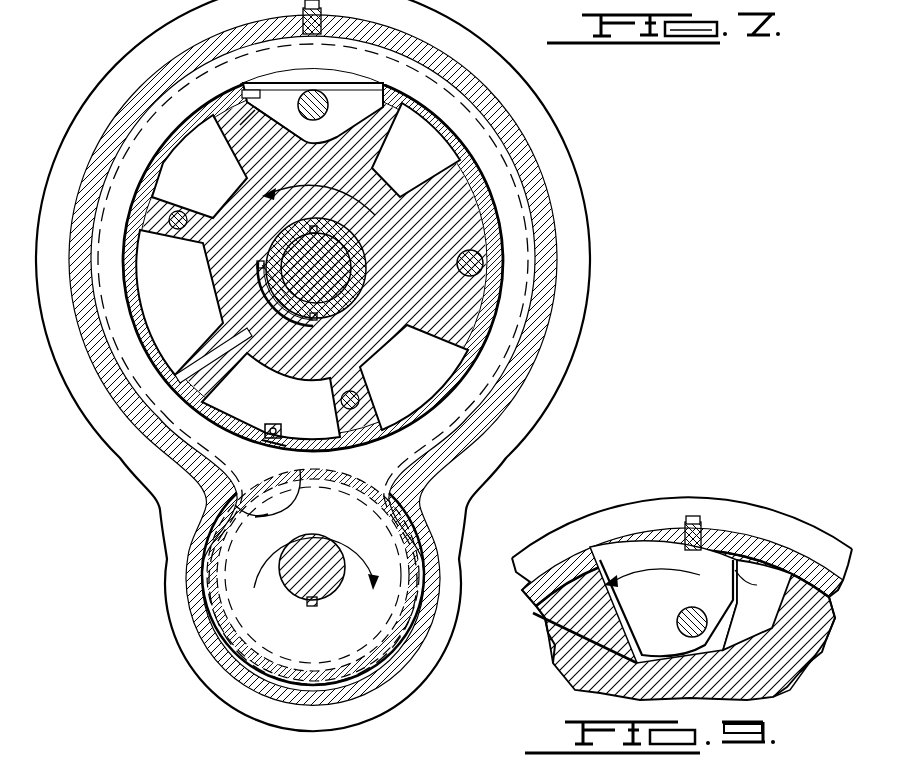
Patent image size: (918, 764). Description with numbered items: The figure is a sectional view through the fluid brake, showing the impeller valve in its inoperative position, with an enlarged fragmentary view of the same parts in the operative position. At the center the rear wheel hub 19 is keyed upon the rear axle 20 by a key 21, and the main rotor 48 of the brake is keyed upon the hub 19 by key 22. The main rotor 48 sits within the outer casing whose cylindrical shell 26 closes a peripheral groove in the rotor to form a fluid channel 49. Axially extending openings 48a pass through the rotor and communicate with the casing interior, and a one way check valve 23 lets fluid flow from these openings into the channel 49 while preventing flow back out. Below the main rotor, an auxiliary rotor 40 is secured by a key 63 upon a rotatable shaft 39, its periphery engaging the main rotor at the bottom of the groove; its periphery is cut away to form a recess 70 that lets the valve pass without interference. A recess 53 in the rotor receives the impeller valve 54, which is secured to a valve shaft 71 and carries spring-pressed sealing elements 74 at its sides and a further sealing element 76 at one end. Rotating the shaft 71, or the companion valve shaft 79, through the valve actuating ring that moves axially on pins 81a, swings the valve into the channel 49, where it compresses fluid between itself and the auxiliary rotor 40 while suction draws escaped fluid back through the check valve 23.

In FIG. 7, the rear wheel hub 19 is at (360, 247).
In FIG. 7, the rear axle 20 is at (328, 275).
In FIG. 7, the key 21 is at (322, 232).
In FIG. 7, the key 22 is at (258, 266).
In FIG. 7, the check valve 23 is at (280, 425).
In FIG. 7, the cylindrical shell 26 is at (350, 26).
In FIG. 9, the cylindrical shell 26 is at (737, 553).
In FIG. 7, the rotatable shaft 39 is at (279, 563).
In FIG. 7, the auxiliary rotor 40 is at (270, 589).
In FIG. 7, the main rotor 48 is at (367, 343).
In FIG. 9, the main rotor 48 is at (760, 698).
In FIG. 7, the axially extending openings 48a is at (298, 395).
In FIG. 7, the fluid channel 49 is at (172, 122).
In FIG. 9, the fluid channel 49 is at (545, 633).
In FIG. 7, the recess 53 is at (236, 158).
In FIG. 9, the recess 53 is at (760, 621).
In FIG. 7, the impeller valve 54 is at (285, 112).
In FIG. 9, the impeller valve 54 is at (737, 578).
In FIG. 7, the key 63 is at (315, 604).
In FIG. 7, the notch or recess 70 is at (233, 495).
In FIG. 7, the valve shaft 71 is at (328, 107).
In FIG. 9, the valve shaft 71 is at (678, 612).
In FIG. 7, the sealing elements 74 is at (322, 83).
In FIG. 9, the sealing elements 74 is at (700, 583).
In FIG. 7, the sealing element 76 is at (255, 90).
In FIG. 9, the sealing element 76 is at (630, 660).
In FIG. 7, the valve shaft 79 is at (458, 266).
In FIG. 7, the pins 81a is at (176, 248).